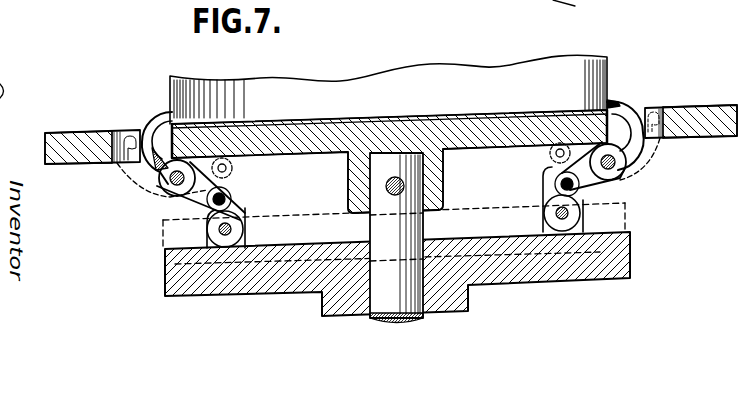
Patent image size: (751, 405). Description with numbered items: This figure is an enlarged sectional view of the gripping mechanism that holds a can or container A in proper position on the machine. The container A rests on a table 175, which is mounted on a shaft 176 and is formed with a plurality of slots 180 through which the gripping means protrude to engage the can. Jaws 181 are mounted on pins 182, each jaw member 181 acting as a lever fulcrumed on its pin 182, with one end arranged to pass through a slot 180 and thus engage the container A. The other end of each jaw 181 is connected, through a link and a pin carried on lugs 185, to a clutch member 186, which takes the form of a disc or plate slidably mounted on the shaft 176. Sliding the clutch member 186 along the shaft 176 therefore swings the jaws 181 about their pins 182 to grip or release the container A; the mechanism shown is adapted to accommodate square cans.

The container A is at (611, 78).
The table 175 is at (713, 124).
The shaft 176 is at (423, 222).
The slot 180 is at (664, 104).
The jaw 181 is at (616, 98).
The pin 182 is at (613, 167).
The lug 185 is at (572, 220).
The clutch member 186 is at (627, 243).